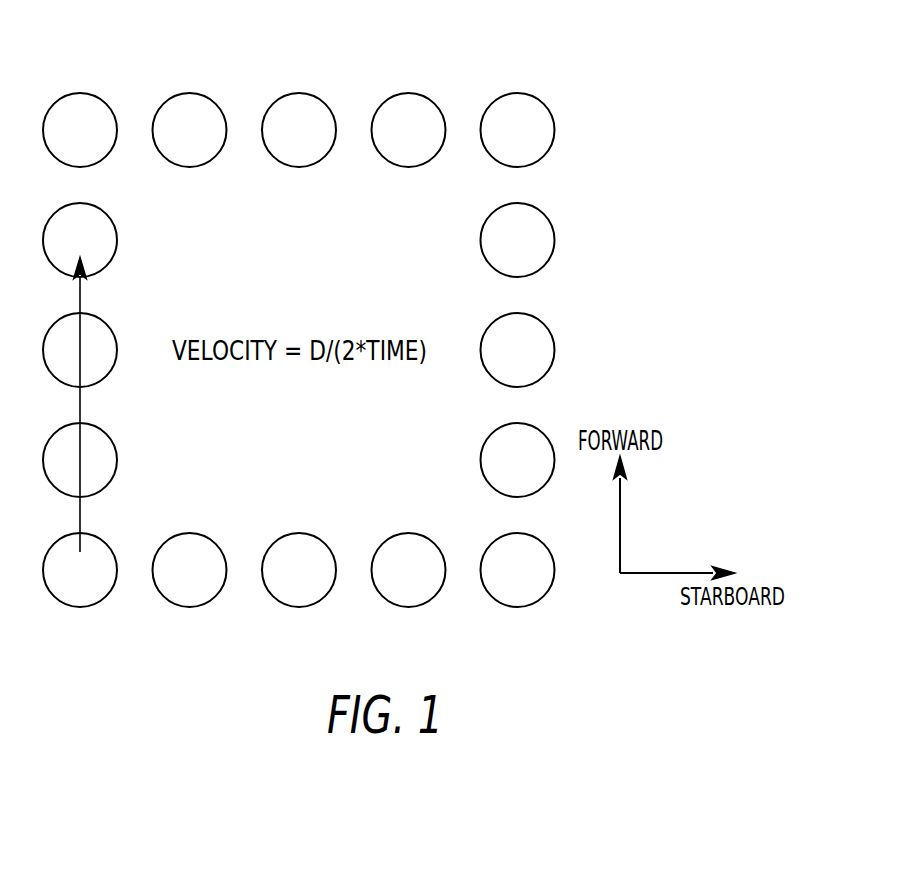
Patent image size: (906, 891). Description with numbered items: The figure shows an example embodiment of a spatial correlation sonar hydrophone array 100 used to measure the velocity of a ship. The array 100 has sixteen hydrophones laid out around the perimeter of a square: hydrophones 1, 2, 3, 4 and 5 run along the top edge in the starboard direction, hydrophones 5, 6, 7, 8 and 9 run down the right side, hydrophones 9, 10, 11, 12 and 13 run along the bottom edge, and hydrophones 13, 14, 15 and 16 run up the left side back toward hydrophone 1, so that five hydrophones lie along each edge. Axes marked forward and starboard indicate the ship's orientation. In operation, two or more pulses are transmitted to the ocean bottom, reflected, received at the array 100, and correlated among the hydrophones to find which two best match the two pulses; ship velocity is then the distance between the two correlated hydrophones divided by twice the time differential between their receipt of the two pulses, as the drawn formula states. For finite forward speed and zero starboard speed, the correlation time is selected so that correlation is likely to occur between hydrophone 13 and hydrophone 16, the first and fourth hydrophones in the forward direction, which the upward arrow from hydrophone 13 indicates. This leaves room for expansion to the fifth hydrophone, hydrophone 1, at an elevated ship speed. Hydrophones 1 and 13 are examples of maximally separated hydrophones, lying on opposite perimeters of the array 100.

The spatial hydrophone array 100 is at (650, 65).
The hydrophone number 1 is at (80, 130).
The hydrophone number 2 is at (190, 130).
The hydrophone number 3 is at (299, 130).
The hydrophone number 4 is at (409, 130).
The hydrophone number 5 is at (518, 130).
The hydrophone number 6 is at (518, 240).
The hydrophone number 7 is at (518, 350).
The hydrophone number 8 is at (518, 460).
The hydrophone number 9 is at (518, 570).
The hydrophone number 10 is at (409, 570).
The hydrophone number 11 is at (299, 570).
The hydrophone number 12 is at (190, 570).
The hydrophone number 13 is at (80, 570).
The hydrophone number 14 is at (80, 460).
The hydrophone number 15 is at (80, 350).
The hydrophone number 16 is at (80, 240).